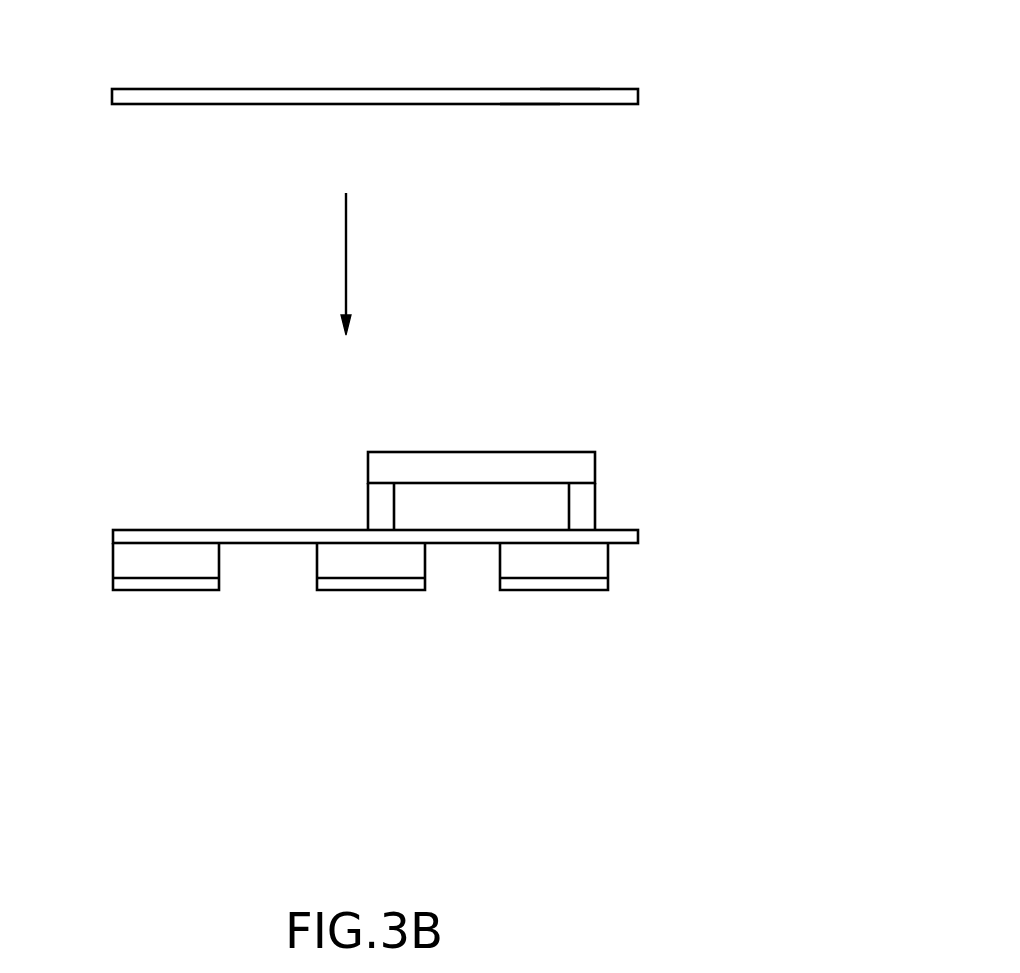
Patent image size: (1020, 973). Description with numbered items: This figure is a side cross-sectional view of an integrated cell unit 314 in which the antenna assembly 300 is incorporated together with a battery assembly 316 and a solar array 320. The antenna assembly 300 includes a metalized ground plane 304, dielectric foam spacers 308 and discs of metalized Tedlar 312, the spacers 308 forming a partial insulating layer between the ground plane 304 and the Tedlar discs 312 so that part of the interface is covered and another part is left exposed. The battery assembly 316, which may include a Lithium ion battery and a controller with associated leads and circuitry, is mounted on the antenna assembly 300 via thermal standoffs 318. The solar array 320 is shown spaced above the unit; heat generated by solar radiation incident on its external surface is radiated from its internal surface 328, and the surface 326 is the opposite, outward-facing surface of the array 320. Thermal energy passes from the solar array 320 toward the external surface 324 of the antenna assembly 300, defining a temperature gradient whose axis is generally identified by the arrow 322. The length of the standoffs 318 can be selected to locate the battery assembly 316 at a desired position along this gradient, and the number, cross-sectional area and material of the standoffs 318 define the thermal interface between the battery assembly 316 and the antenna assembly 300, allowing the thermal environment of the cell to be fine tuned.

The antenna assembly 300 is at (381, 551).
The metalized ground plane 304 is at (146, 533).
The dielectric foam spacers 308 is at (123, 558).
The metalized Tedlar discs 312 is at (203, 582).
The integrated cell unit 314 is at (700, 200).
The battery assembly 316 is at (584, 463).
The thermal standoffs 318 is at (584, 500).
The solar array 320 is at (640, 99).
The thermal gradient axis arrow 322 is at (346, 285).
The external surface of antenna assembly 324 is at (410, 590).
The top surface of plate 326 is at (562, 89).
The internal surface of solar array 328 is at (532, 97).